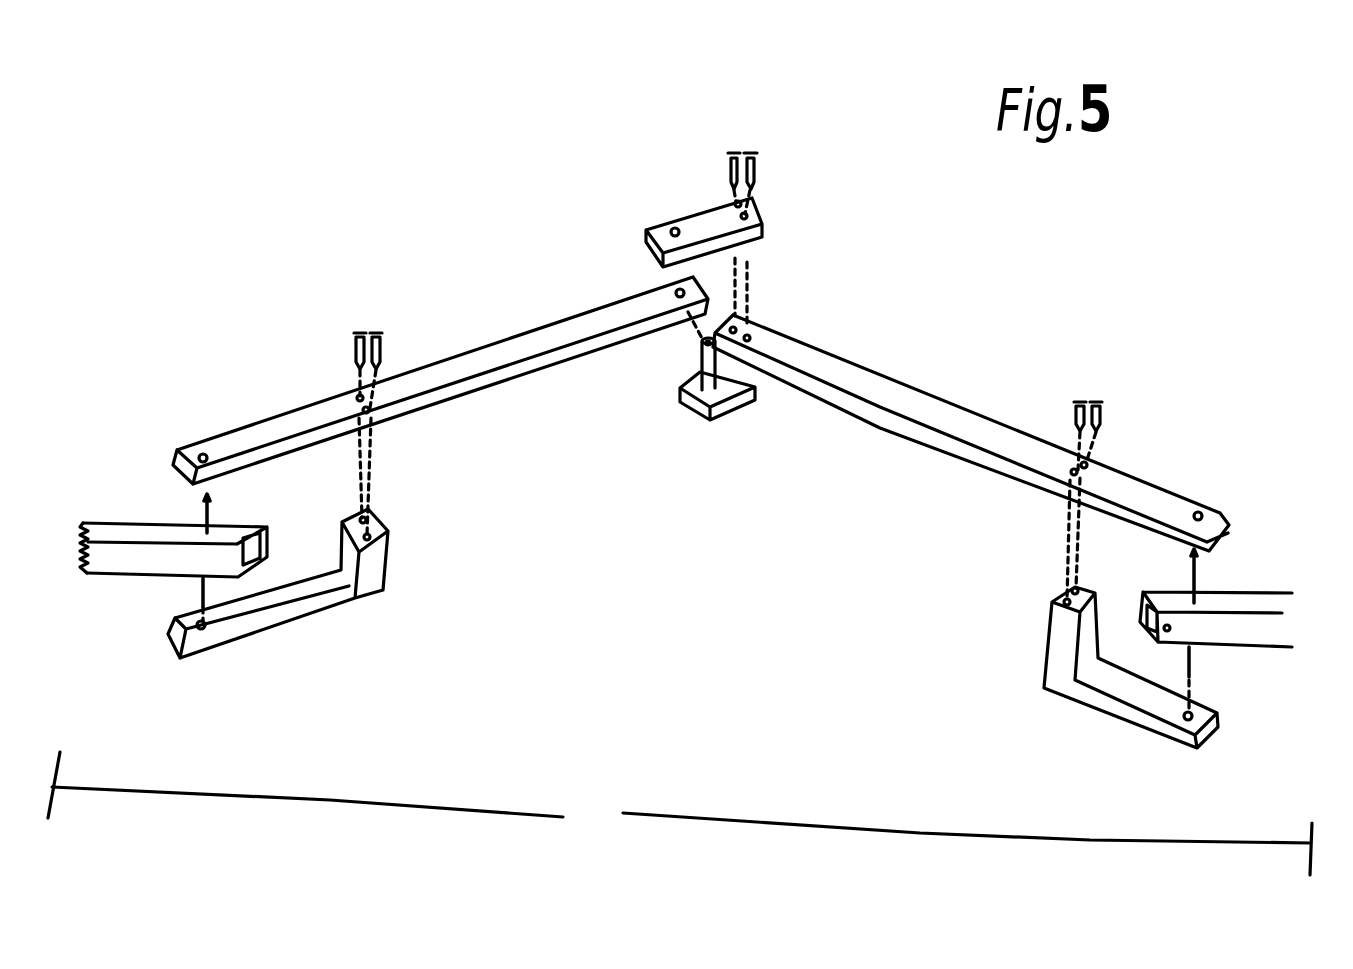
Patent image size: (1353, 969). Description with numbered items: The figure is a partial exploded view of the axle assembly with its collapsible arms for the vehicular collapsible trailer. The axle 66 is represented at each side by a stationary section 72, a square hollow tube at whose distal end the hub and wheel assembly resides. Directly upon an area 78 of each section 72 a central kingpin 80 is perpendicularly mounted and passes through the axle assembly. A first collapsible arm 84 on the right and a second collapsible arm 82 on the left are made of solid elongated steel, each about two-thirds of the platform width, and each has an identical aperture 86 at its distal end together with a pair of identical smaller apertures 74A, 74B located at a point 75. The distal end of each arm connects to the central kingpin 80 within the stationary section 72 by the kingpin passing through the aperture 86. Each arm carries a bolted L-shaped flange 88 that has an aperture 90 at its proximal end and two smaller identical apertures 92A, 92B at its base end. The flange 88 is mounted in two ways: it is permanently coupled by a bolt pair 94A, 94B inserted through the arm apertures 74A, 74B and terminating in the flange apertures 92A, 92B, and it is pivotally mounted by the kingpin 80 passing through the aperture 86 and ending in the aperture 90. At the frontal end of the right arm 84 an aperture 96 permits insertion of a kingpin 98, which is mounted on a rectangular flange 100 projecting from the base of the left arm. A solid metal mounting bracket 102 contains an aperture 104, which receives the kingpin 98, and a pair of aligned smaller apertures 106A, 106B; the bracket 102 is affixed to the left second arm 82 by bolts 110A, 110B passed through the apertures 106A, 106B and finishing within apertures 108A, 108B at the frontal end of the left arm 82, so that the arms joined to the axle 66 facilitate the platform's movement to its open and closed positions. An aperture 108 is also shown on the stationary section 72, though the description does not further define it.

The axle 66 is at (680, 813).
The stationary section of the axle 72 is at (1270, 647).
The smaller aperture 74A is at (1087, 465).
The smaller aperture 74B is at (1072, 473).
The point 75 is at (1072, 470).
The area 78 is at (1197, 603).
The central kingpin 80 is at (1197, 660).
The second collapsible arm 82 is at (910, 387).
The first collapsible arm 84 is at (492, 340).
The aperture 86 is at (1203, 514).
The L-shaped flange 88 is at (1044, 688).
The aperture 90 is at (1187, 727).
The smaller aperture 92A is at (1073, 588).
The smaller aperture 92B is at (1065, 602).
The bolt 94A is at (1100, 400).
The bolt 94B is at (1080, 400).
The aperture 96 is at (683, 297).
The kingpin 98 is at (715, 375).
The rectangular flange 100 is at (700, 413).
The mounting bracket 102 is at (757, 215).
The aperture 104 is at (675, 232).
The smaller aperture 106A is at (735, 203).
The smaller aperture 106B is at (750, 213).
The side rail aperture 108 is at (1172, 628).
The aperture 108A is at (737, 328).
The aperture 108B is at (750, 338).
The bolt 110A is at (740, 150).
The bolt 110B is at (764, 150).